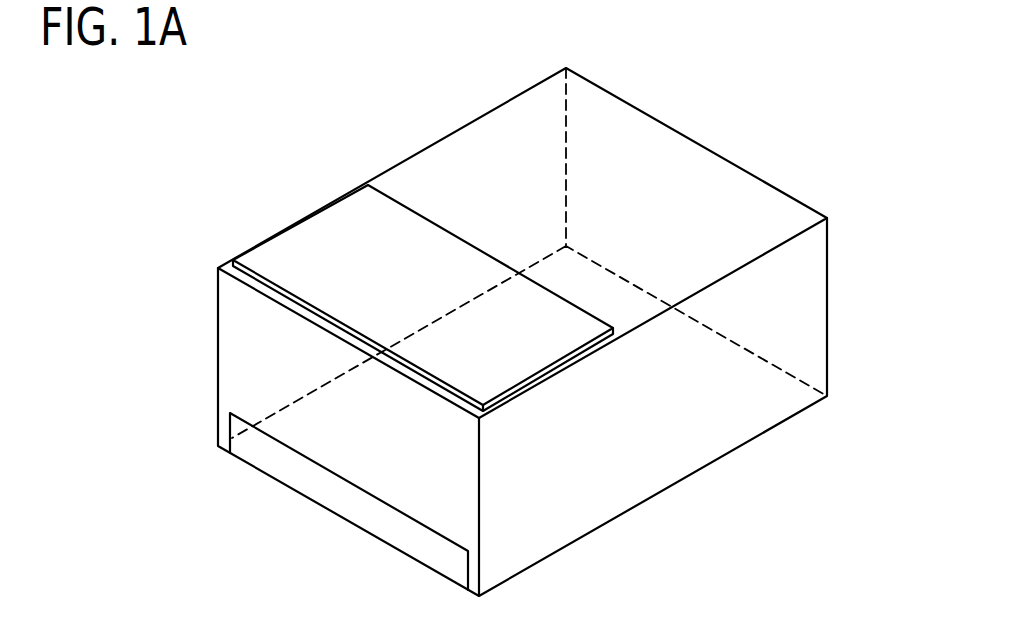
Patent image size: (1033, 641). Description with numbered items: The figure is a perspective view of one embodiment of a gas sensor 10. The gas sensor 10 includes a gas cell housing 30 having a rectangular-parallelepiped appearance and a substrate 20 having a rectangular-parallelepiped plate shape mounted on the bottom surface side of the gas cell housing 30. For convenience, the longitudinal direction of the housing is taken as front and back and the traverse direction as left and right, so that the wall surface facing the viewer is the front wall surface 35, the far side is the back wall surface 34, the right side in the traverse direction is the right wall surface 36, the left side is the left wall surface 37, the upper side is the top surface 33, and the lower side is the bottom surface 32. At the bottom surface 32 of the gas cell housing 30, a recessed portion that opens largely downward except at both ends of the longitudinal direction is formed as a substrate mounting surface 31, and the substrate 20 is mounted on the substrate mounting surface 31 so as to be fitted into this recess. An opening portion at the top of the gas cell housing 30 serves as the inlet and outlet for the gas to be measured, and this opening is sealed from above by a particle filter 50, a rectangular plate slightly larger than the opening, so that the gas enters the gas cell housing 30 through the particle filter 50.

The gas sensor 10 is at (292, 163).
The substrate 20 is at (317, 505).
The gas cell housing 30 is at (828, 273).
The substrate mounting surface 31 is at (266, 436).
The bottom surface 32 is at (226, 449).
The top surface 33 is at (517, 130).
The back wall surface 34 is at (677, 177).
The front wall surface 35 is at (427, 483).
The right wall surface 36 is at (677, 447).
The left wall surface 37 is at (440, 188).
The particle filter 50 is at (292, 255).